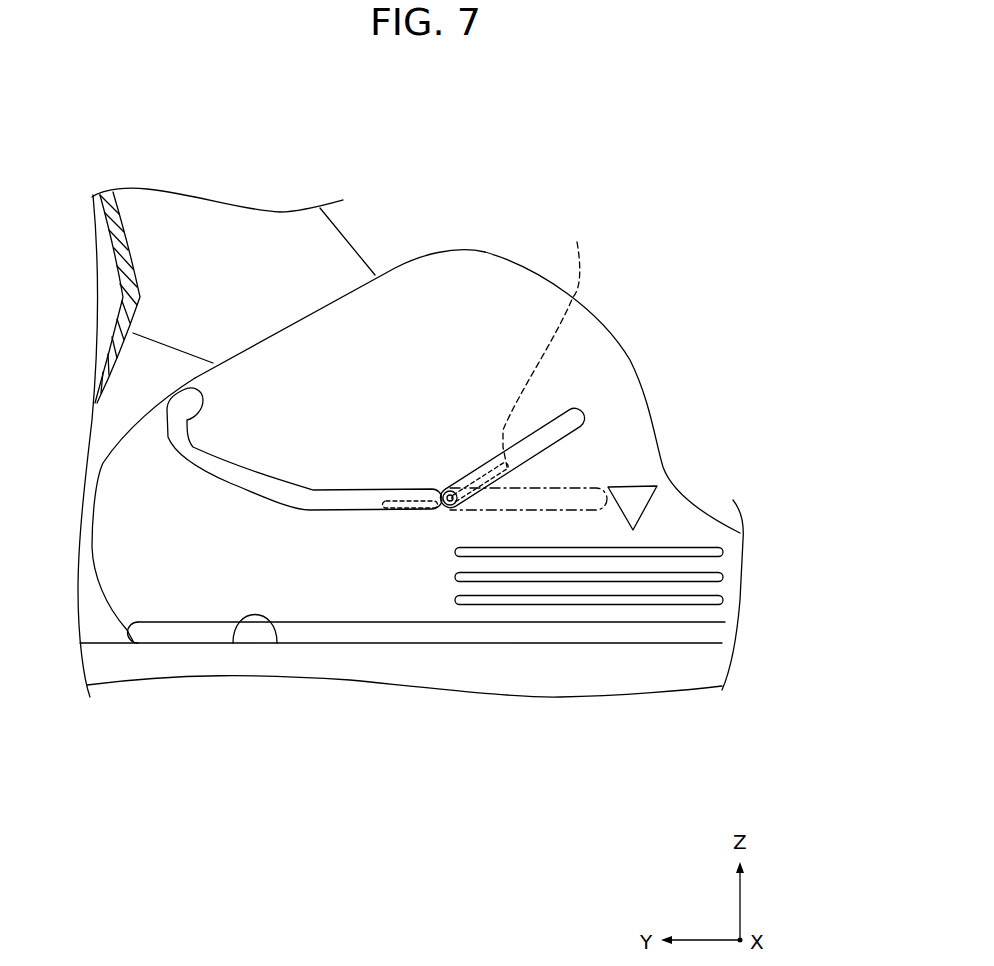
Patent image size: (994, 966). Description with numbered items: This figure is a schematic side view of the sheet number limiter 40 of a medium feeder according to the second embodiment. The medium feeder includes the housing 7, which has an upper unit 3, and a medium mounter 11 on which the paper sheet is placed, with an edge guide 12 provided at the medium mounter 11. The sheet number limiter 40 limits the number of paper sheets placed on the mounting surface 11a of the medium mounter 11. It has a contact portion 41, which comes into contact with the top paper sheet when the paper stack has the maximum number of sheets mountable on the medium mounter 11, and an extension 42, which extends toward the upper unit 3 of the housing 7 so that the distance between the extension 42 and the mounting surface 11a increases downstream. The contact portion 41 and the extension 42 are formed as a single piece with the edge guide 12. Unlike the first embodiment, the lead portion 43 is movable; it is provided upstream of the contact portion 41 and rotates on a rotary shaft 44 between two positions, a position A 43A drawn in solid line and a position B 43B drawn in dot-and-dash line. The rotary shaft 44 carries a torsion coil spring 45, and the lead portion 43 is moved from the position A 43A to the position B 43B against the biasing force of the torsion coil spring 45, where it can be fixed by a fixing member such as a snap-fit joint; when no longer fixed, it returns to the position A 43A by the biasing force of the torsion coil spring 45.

The upper unit 3 is at (166, 262).
The housing 7 is at (125, 235).
The medium mounter 11 is at (535, 665).
The mounting surface 11a is at (277, 643).
The edge guide 12 is at (607, 327).
The sheet number limiter 40 is at (443, 303).
The contact portion 41 is at (299, 485).
The extension 42 is at (450, 513).
The lead portion 43 is at (609, 443).
The position A 43A is at (585, 412).
The position B 43B is at (582, 487).
The rotary shaft 44 is at (452, 510).
The torsion coil spring 45 is at (545, 341).